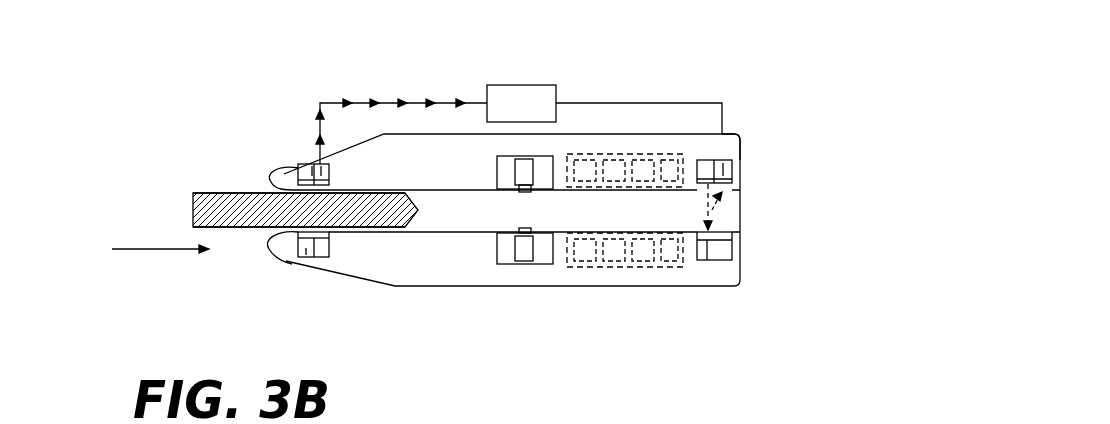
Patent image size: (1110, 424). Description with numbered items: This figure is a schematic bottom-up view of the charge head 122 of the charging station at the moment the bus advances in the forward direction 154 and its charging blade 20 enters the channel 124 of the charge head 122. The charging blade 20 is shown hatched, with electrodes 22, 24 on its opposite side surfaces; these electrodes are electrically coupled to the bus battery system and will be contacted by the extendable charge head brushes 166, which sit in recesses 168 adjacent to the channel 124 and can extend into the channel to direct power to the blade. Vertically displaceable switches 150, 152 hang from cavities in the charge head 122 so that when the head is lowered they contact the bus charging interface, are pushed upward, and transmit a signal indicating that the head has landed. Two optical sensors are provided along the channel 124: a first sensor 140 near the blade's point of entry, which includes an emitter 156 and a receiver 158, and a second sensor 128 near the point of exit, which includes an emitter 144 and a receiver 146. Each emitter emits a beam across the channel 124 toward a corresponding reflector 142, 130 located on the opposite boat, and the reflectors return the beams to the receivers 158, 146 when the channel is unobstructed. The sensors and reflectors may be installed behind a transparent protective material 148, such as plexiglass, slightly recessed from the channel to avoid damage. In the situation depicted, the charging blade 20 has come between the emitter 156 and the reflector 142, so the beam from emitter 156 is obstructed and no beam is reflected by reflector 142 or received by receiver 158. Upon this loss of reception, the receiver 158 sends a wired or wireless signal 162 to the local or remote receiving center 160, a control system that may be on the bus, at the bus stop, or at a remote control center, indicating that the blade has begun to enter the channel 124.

The charging blade 20 is at (213, 203).
The electrode 22 is at (242, 190).
The electrode 24 is at (233, 230).
The charge head 122 is at (474, 341).
The channel 124 is at (430, 215).
The sensor 128 is at (737, 144).
The reflector 130 is at (710, 253).
The sensor 140 is at (290, 176).
The reflector 142 is at (305, 253).
The emitter 144 is at (705, 160).
The receiver 146 is at (722, 171).
The protective material 148 is at (307, 258).
The switch 150 is at (527, 168).
The switch 152 is at (523, 248).
The forward direction 154 is at (162, 252).
The emitter 156 is at (308, 167).
The receiver 158 is at (322, 169).
The receiving center 160 is at (540, 85).
The signal 162 is at (360, 103).
The charge head brush 166 is at (628, 178).
The recess 168 is at (662, 152).